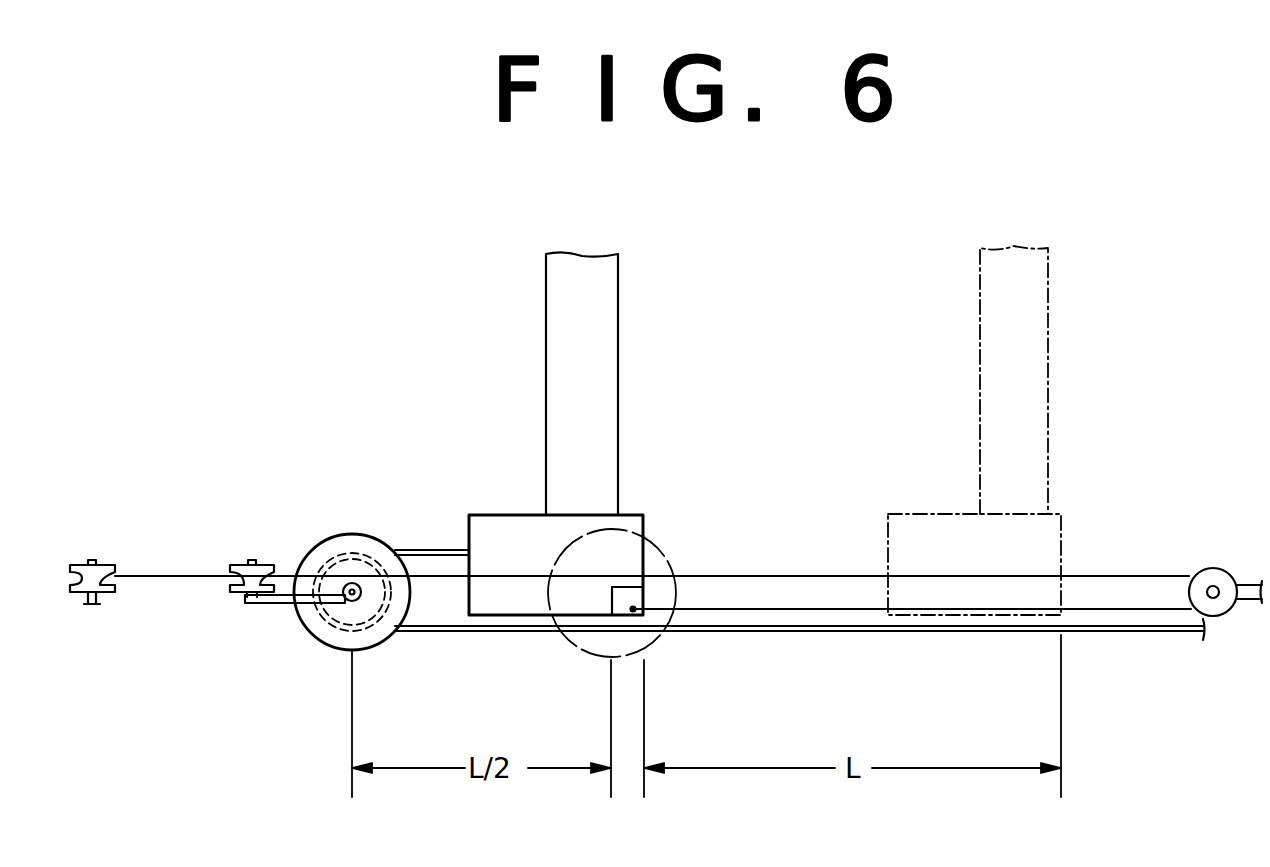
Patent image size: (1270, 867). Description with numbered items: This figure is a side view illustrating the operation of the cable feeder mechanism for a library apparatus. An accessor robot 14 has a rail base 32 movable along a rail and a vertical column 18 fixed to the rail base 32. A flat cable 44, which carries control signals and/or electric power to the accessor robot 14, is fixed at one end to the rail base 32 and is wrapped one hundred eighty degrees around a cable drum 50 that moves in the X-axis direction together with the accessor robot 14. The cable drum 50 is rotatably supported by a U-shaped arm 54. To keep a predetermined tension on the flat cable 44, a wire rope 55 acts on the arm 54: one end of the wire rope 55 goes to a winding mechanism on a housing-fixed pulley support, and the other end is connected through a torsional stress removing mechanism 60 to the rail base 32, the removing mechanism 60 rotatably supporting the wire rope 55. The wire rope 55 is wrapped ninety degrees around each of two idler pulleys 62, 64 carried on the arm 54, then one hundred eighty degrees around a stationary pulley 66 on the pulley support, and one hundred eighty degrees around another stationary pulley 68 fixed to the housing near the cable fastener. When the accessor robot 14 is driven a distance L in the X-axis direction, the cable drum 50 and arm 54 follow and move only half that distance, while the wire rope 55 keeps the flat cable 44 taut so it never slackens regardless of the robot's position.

The accessor robot 14 is at (512, 375).
The vertical column 18 is at (608, 293).
The rail base 32 is at (637, 515).
The flat cable 44 is at (430, 549).
The cable drum 50 is at (352, 533).
The U-shaped arm 54 is at (277, 604).
The wire rope 55 is at (813, 574).
The torsional stress removing mechanism 60 is at (645, 560).
The idler pulley 62 is at (240, 563).
The idler pulley 64 is at (252, 578).
The stationary pulley 66 is at (102, 560).
The stationary pulley 68 is at (1213, 575).